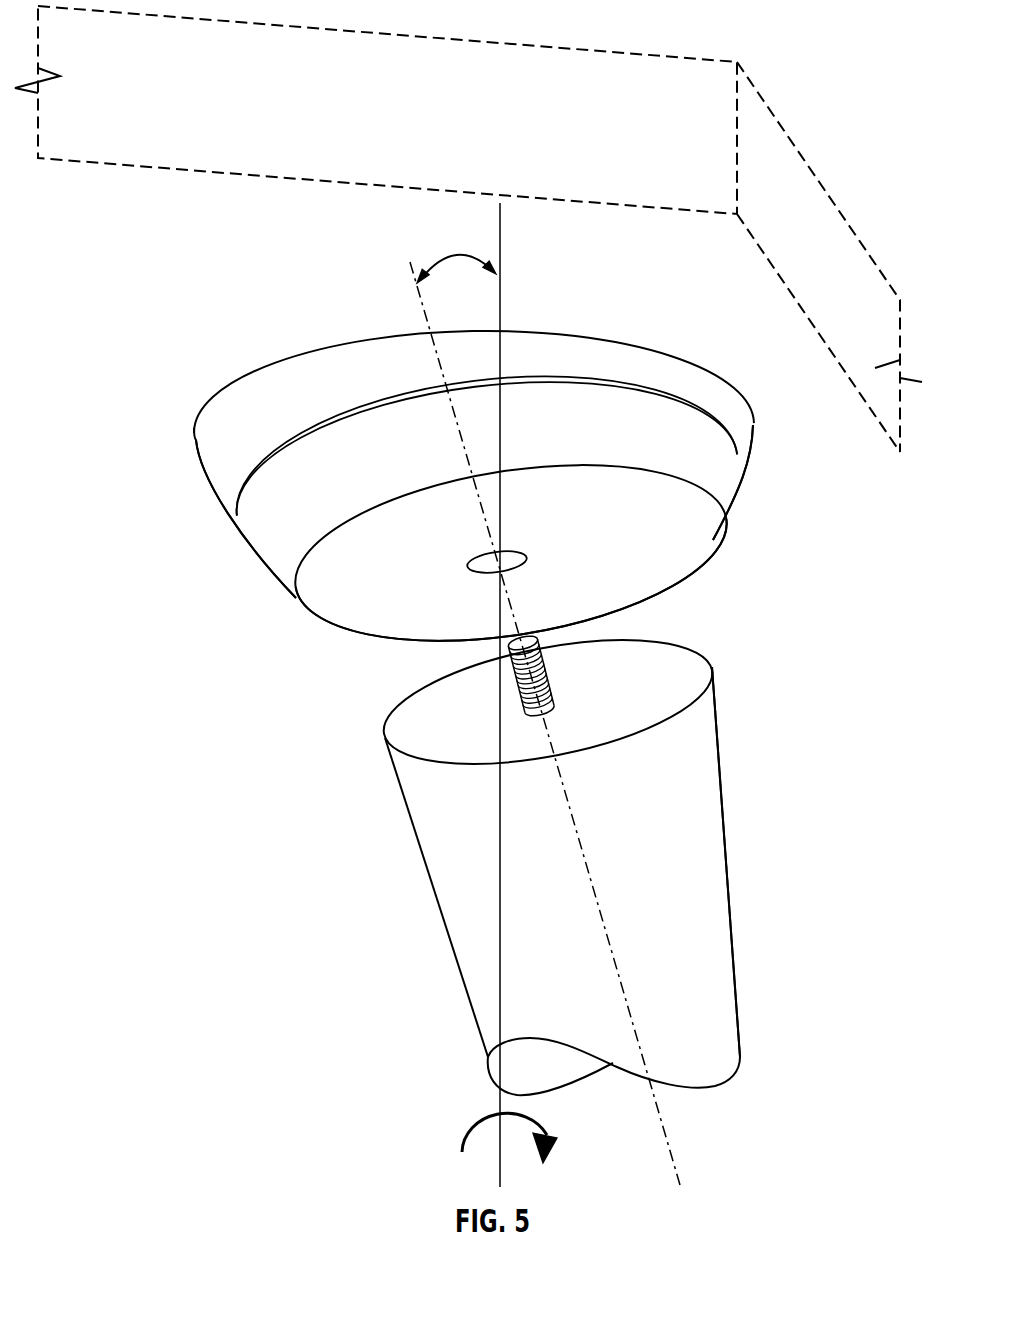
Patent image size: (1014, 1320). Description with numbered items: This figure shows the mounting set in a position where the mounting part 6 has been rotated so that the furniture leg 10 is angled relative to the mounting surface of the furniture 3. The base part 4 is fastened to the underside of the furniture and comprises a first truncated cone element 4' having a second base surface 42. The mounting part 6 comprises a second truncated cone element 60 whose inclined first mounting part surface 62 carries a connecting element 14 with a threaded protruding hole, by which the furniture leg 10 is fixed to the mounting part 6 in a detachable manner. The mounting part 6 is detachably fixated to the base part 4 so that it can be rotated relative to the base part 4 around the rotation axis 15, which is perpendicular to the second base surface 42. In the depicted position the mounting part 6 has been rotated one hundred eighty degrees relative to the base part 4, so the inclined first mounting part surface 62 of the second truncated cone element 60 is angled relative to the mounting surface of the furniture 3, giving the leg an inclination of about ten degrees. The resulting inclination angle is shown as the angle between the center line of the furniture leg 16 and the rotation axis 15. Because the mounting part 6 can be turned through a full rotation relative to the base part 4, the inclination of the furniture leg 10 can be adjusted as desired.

The mounting surface of the furniture 3 is at (648, 277).
The second base surface 42 is at (220, 386).
The mounting part 6 is at (199, 505).
The second truncated cone element 60 is at (199, 505).
The base part 4 is at (437, 553).
The first truncated cone element 4' is at (466, 518).
The first mounting part surface 62 is at (665, 512).
The connecting element 14 is at (510, 560).
The rotation axis 15 is at (497, 855).
The furniture leg 10 is at (412, 978).
The center line of the furniture leg 16 is at (620, 972).